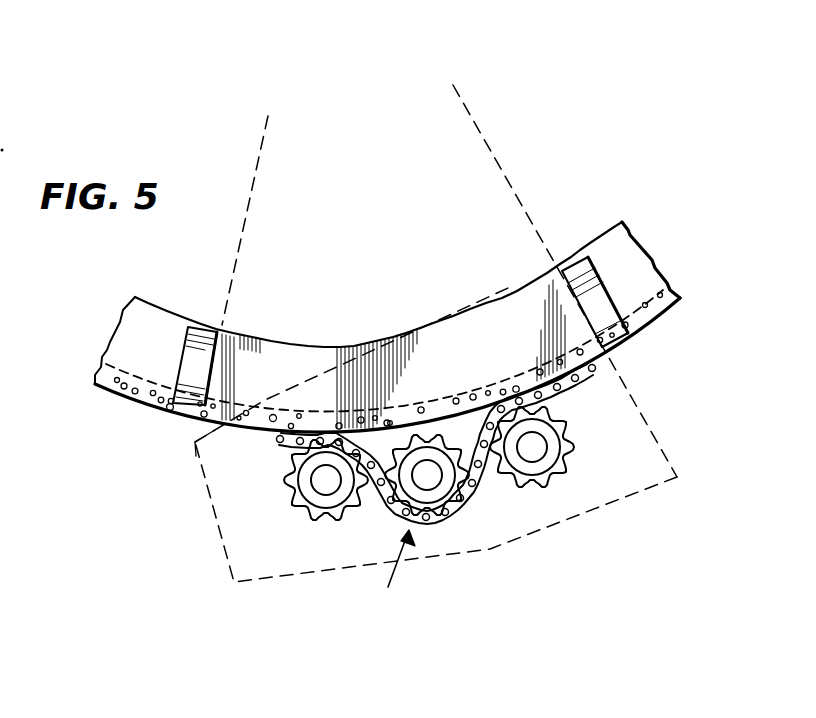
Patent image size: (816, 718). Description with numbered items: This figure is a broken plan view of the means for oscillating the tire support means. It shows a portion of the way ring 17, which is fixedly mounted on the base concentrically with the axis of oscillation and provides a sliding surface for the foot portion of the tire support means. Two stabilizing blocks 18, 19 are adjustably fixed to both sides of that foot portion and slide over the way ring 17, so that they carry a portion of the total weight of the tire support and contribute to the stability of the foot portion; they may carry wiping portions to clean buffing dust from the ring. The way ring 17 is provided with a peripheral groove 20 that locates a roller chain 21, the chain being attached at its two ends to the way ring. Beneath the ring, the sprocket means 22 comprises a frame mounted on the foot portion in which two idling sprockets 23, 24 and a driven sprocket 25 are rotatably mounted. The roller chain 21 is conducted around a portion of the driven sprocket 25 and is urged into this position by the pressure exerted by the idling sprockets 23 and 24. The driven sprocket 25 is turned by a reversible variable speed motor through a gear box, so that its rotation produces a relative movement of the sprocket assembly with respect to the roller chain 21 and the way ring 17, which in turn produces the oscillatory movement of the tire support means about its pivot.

The way ring 17 is at (164, 318).
The stabilizing block 18 is at (203, 340).
The stabilizing block 19 is at (578, 272).
The peripheral groove 20 is at (145, 387).
The roller chain 21 is at (462, 503).
The sprocket means 22 is at (394, 571).
The idling sprocket 23 is at (333, 528).
The idling sprocket 24 is at (563, 483).
The driven sprocket 25 is at (458, 515).